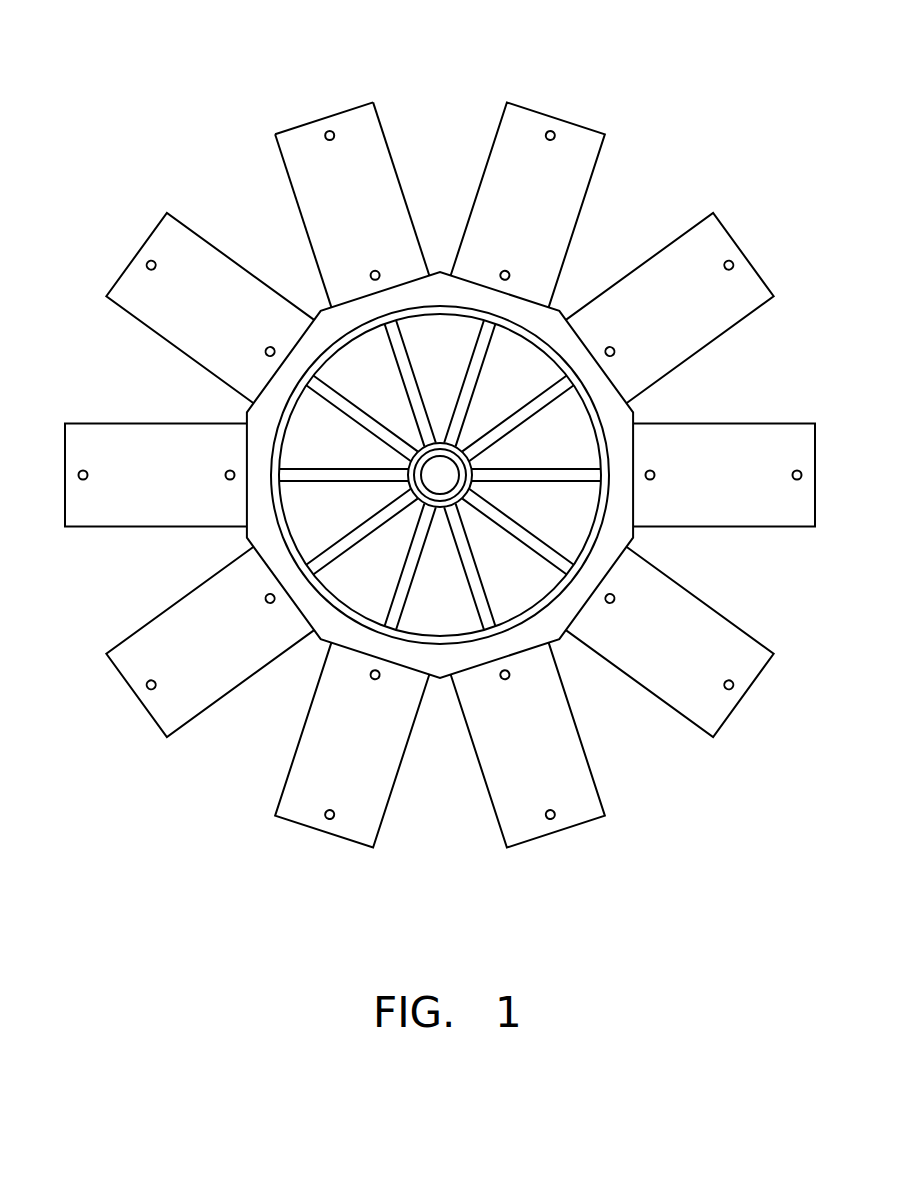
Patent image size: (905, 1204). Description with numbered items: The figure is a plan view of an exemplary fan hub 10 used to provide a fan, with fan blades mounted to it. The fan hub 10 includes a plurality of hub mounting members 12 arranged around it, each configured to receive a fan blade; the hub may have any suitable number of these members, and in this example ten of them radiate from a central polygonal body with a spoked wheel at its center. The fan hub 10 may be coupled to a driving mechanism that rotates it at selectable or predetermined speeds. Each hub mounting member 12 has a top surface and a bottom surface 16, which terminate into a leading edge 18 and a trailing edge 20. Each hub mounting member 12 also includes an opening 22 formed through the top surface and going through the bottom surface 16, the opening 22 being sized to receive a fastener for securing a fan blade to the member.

The fan hub 10 is at (191, 81).
The hub mounting member 12 is at (200, 315).
The bottom surface 16 is at (361, 203).
The leading edge 18 is at (295, 197).
The trailing edge 20 is at (389, 147).
The opening 22 is at (327, 133).